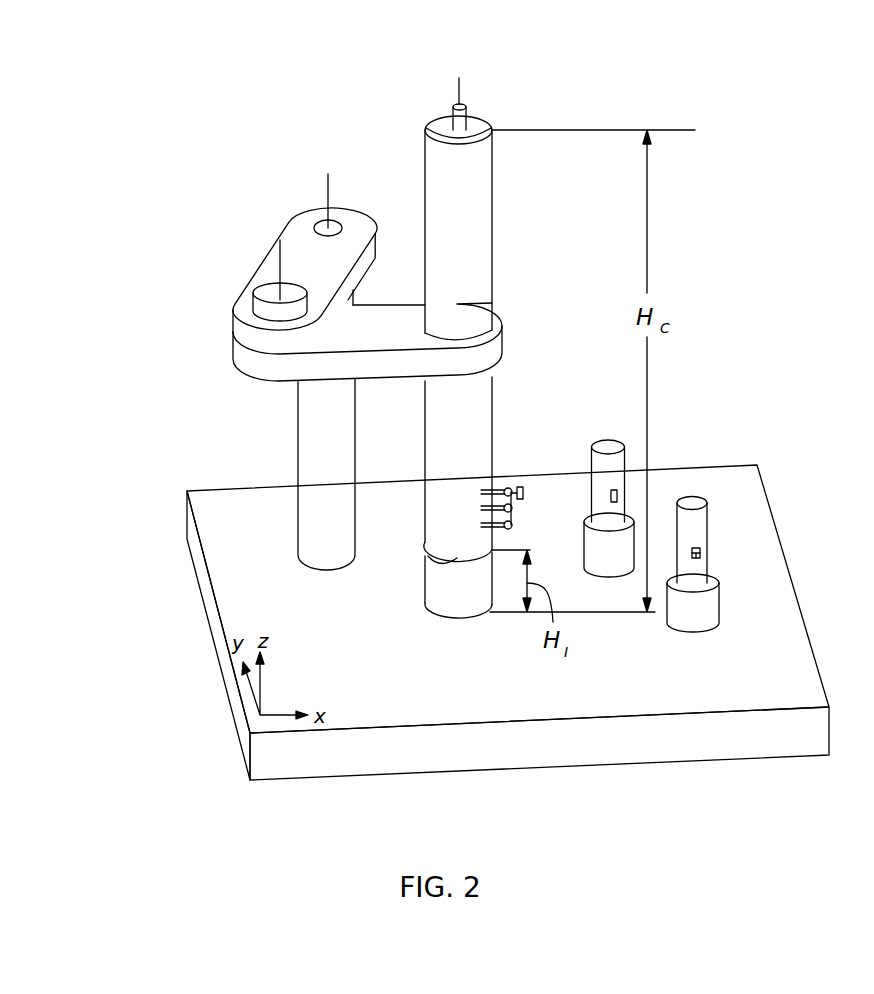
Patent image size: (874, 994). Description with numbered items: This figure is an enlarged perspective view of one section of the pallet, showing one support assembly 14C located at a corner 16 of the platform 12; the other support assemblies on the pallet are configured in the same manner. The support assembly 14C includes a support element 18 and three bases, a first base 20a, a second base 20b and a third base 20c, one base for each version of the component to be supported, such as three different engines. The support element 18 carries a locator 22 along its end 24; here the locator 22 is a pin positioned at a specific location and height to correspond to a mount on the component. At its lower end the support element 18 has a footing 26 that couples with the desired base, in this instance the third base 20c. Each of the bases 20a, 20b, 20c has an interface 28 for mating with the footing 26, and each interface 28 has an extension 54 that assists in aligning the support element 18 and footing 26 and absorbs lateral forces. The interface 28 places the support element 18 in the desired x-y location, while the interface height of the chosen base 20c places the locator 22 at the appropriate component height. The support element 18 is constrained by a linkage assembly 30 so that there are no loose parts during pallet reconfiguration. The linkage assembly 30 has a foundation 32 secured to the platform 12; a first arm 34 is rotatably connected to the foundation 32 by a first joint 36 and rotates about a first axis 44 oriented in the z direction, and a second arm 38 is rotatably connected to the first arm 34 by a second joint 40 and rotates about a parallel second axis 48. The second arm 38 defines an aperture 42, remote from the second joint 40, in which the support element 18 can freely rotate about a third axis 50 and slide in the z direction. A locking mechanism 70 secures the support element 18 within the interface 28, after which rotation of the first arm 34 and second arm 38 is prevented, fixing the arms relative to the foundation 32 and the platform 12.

The platform 12 is at (667, 482).
The support assembly 14C is at (738, 304).
The corner 16 is at (346, 633).
The support element 18 is at (437, 515).
The first base 20a is at (697, 603).
The second base 20b is at (613, 563).
The third base 20c is at (460, 605).
The locator 22 is at (436, 88).
The end 24 is at (442, 124).
The footing 26 is at (433, 563).
The interface 28 is at (710, 574).
The linkage assembly 30 is at (206, 368).
The foundation 32 is at (297, 457).
The first arm 34 is at (300, 236).
The first joint 36 is at (337, 223).
The second arm 38 is at (382, 378).
The second joint 40 is at (268, 296).
The aperture 42 is at (418, 321).
The first axis 44 is at (327, 193).
The second axis 48 is at (278, 258).
The third axis 50 is at (458, 90).
The extension 54 is at (610, 472).
The locking mechanism 70 is at (538, 504).